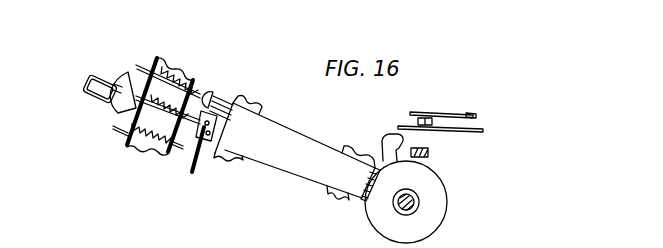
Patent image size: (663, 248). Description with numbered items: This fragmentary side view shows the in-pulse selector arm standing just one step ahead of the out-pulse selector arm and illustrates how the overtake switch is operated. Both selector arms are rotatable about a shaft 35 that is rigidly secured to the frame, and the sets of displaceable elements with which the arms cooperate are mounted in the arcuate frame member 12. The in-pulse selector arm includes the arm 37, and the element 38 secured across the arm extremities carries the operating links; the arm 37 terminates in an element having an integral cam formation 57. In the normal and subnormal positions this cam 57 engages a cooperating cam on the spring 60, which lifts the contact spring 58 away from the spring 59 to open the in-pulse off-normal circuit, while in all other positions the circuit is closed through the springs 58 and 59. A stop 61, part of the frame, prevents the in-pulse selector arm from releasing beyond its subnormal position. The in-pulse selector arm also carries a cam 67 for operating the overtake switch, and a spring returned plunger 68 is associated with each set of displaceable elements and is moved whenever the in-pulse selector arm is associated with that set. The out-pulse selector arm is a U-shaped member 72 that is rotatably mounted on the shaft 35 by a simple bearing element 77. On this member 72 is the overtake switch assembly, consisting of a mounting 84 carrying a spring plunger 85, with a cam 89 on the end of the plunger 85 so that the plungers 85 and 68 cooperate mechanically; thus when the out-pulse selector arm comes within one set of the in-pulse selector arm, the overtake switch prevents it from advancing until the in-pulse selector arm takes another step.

The arcuate shaped frame member 12 is at (167, 155).
The shaft 35 is at (420, 203).
The arm 37 is at (272, 153).
The element 38 is at (95, 98).
The cam formation 57 is at (381, 143).
The in-pulse off-normal contact spring 58 is at (440, 112).
The in-pulse off-normal contact spring 59 is at (473, 115).
The spring 60 is at (468, 129).
The stop 61 is at (428, 150).
The cam 67 is at (125, 73).
The plunger 68 is at (162, 72).
The U-shaped member 72 is at (363, 194).
The bearing element 77 is at (438, 212).
The mounting 84 is at (277, 125).
The spring plunger 85 is at (220, 103).
The cam 89 is at (208, 93).